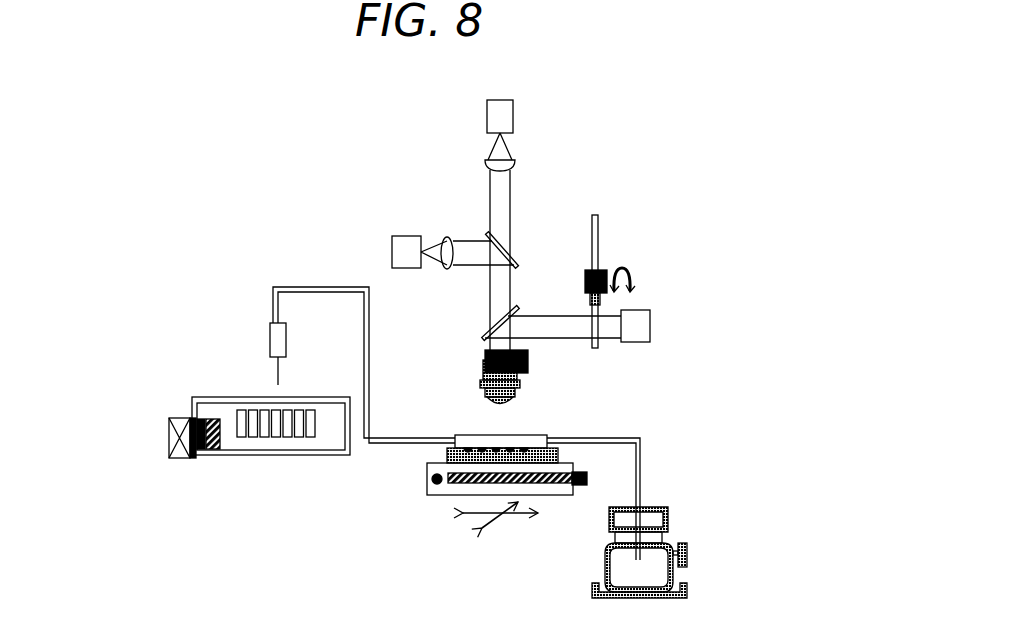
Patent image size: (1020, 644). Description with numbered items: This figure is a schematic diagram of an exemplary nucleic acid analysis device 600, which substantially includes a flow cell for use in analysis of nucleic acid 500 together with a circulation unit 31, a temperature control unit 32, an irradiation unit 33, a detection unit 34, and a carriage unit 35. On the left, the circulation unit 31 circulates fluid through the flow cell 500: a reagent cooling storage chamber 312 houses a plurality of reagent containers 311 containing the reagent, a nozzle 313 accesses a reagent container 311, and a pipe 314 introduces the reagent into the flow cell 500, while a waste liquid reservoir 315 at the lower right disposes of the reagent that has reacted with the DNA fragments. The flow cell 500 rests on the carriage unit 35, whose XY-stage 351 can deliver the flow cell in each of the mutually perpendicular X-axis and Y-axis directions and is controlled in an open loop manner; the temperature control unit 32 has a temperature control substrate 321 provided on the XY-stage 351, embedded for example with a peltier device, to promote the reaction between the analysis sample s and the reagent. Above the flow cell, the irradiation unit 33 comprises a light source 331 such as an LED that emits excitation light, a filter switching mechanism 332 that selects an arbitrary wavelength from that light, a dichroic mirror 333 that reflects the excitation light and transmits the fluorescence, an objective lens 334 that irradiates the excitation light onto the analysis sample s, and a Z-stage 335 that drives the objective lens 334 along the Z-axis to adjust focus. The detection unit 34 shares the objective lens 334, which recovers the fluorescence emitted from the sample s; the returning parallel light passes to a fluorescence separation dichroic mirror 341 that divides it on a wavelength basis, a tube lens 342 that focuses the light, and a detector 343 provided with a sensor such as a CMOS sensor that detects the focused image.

The nucleic acid analysis device 600 is at (375, 147).
The detection unit 34 is at (566, 186).
The detector 343 is at (492, 113).
The tube lens 342 is at (518, 163).
The fluorescence separation dichroic mirror 341 is at (512, 250).
The dichroic mirror 333 is at (514, 313).
The irradiation unit 33 is at (646, 302).
The filter switching mechanism 332 is at (584, 270).
The light source 331 is at (636, 329).
The Z-stage 335 is at (486, 356).
The objective lens 334 is at (520, 380).
The circulation unit 31 is at (268, 302).
The pipe 314 is at (286, 289).
The nozzle 313 is at (285, 335).
The reagent cooling storage chamber 312 is at (221, 410).
The reagent container 311 is at (247, 430).
The flow cell for use in analysis of nucleic acid 500 is at (452, 434).
The analysis sample s is at (548, 448).
The temperature control unit 32 is at (557, 451).
The temperature control substrate 321 is at (553, 466).
The XY-stage 351 is at (428, 480).
The carriage unit 35 is at (563, 498).
The waste liquid reservoir 315 is at (660, 550).